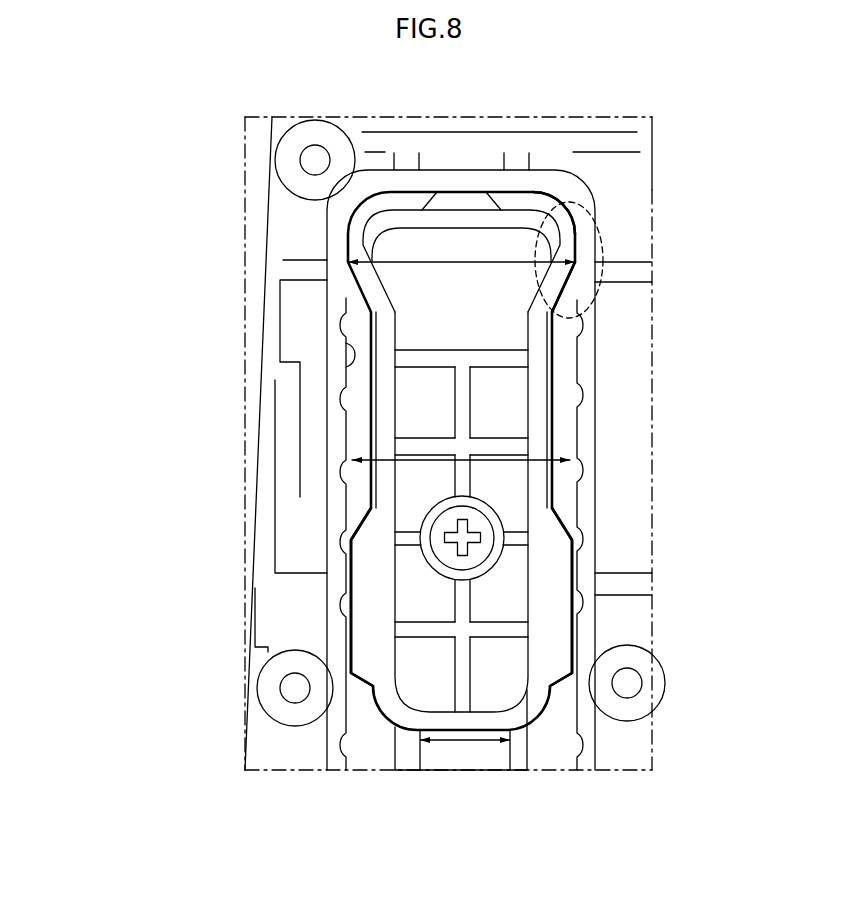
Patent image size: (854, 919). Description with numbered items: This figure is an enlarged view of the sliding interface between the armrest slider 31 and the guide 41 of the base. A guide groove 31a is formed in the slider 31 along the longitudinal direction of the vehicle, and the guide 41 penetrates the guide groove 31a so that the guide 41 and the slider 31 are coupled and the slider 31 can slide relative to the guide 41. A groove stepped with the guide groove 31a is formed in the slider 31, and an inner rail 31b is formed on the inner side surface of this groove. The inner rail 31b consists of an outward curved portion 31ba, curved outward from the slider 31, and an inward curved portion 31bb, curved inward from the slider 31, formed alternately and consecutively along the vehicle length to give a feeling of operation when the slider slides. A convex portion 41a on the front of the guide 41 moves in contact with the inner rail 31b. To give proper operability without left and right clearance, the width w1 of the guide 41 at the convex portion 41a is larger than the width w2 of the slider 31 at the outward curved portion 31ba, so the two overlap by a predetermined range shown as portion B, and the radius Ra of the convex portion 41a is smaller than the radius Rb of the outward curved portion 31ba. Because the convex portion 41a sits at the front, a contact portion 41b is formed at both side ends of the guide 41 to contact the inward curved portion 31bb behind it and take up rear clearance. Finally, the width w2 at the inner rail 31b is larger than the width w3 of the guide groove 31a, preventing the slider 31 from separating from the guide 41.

The slider 31 is at (620, 525).
The guide groove 31a is at (420, 770).
The inner rail 31b is at (110, 268).
The outward curved portion 31ba is at (348, 298).
The inward curved portion 31bb is at (346, 343).
The guide 41 is at (425, 405).
The convex portion 41a is at (350, 221).
The contact portion 41b is at (368, 583).
The radius of the convex portion Ra is at (557, 218).
The radius of the outward curved portion Rb is at (582, 323).
The overlap portion B is at (575, 260).
The width of the guide portion formed with the convex portion w1 is at (461, 251).
The width of the slider portion formed with the outward curved portion w2 is at (461, 449).
The width of the guide groove w3 is at (465, 750).